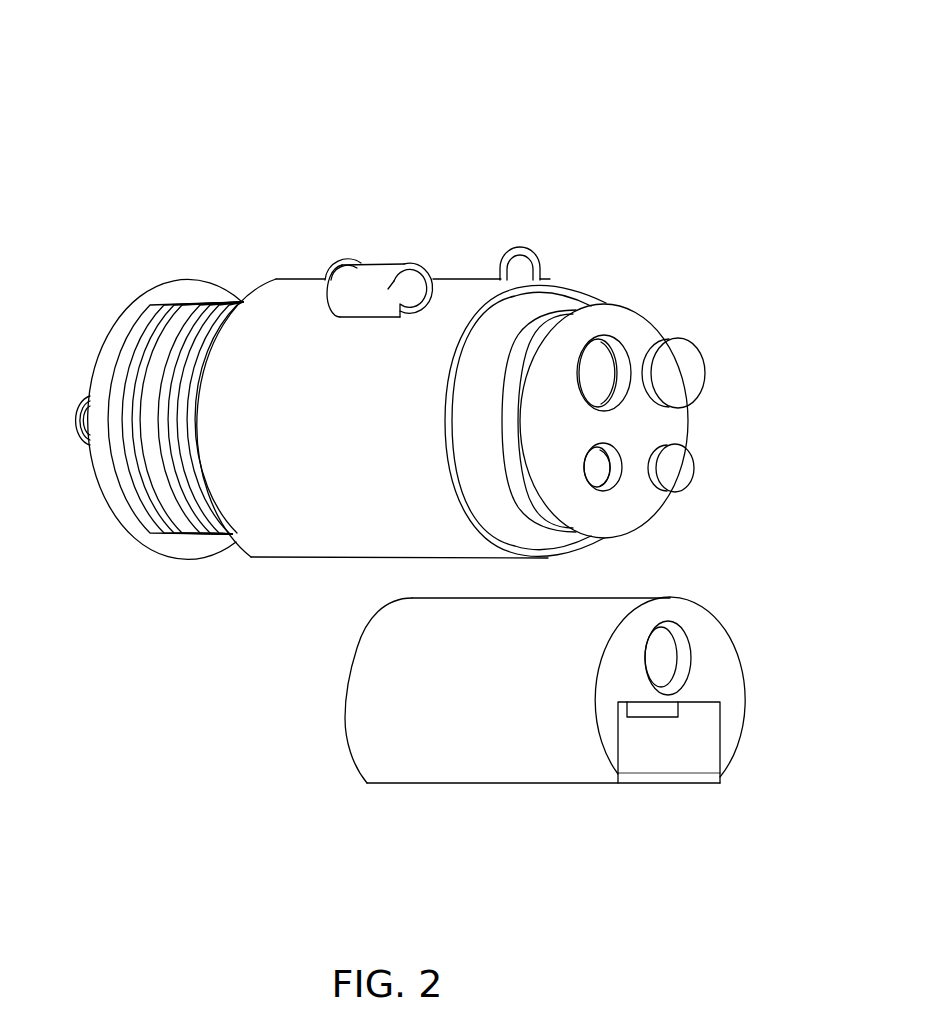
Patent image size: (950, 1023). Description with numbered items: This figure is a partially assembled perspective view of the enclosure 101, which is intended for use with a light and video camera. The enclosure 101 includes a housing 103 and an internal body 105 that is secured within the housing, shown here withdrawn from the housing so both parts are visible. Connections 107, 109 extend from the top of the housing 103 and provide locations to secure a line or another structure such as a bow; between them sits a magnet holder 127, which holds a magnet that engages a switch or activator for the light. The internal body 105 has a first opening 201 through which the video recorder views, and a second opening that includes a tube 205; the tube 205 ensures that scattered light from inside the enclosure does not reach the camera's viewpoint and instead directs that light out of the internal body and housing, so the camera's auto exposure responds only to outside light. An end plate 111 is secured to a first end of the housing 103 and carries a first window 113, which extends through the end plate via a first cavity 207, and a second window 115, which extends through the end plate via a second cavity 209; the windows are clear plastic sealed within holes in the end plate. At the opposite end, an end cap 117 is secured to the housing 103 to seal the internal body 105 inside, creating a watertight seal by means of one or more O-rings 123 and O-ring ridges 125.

The enclosure 101 is at (103, 66).
The housing 103 is at (462, 279).
The internal body 105 is at (480, 783).
The connection 107 is at (341, 250).
The connection 109 is at (520, 247).
The end plate 111 is at (688, 425).
The first window 113 is at (682, 472).
The second window 115 is at (690, 358).
The end cap 117 is at (168, 247).
The O-ring 123 is at (222, 530).
The O-ring ridge 125 is at (153, 515).
The magnet holder 127 is at (390, 264).
The first opening 201 is at (652, 760).
The tube 205 is at (668, 660).
The first cavity 207 is at (607, 490).
The second cavity 209 is at (612, 337).